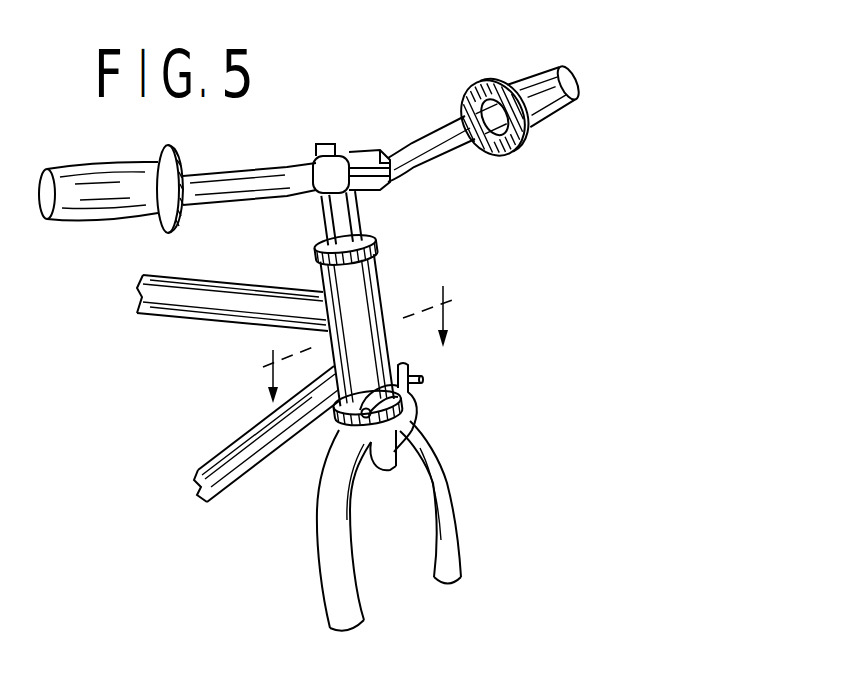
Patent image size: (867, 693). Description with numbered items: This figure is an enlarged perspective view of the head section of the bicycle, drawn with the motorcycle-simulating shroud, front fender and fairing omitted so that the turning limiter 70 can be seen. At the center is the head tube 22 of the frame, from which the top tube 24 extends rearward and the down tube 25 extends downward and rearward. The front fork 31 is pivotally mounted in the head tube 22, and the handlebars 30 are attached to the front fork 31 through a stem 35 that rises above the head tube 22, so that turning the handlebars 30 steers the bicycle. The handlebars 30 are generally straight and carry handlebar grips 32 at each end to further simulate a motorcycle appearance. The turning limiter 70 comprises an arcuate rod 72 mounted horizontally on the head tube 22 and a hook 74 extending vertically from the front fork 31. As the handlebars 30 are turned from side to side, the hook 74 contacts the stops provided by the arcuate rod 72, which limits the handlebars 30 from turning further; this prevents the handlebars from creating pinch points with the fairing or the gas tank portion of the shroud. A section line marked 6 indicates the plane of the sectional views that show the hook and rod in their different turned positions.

The section line 6- 6 is at (355, 337).
The head tube 22 is at (367, 300).
The top tube 24 is at (193, 309).
The down tube 25 is at (230, 467).
The handlebars 30 is at (445, 143).
The front fork 31 is at (439, 551).
The handlebar grips 32 is at (108, 181).
The stem 35 is at (342, 222).
The turning limiter 70 is at (416, 363).
The arcuate rod 72 is at (350, 421).
The hook 74 is at (412, 398).